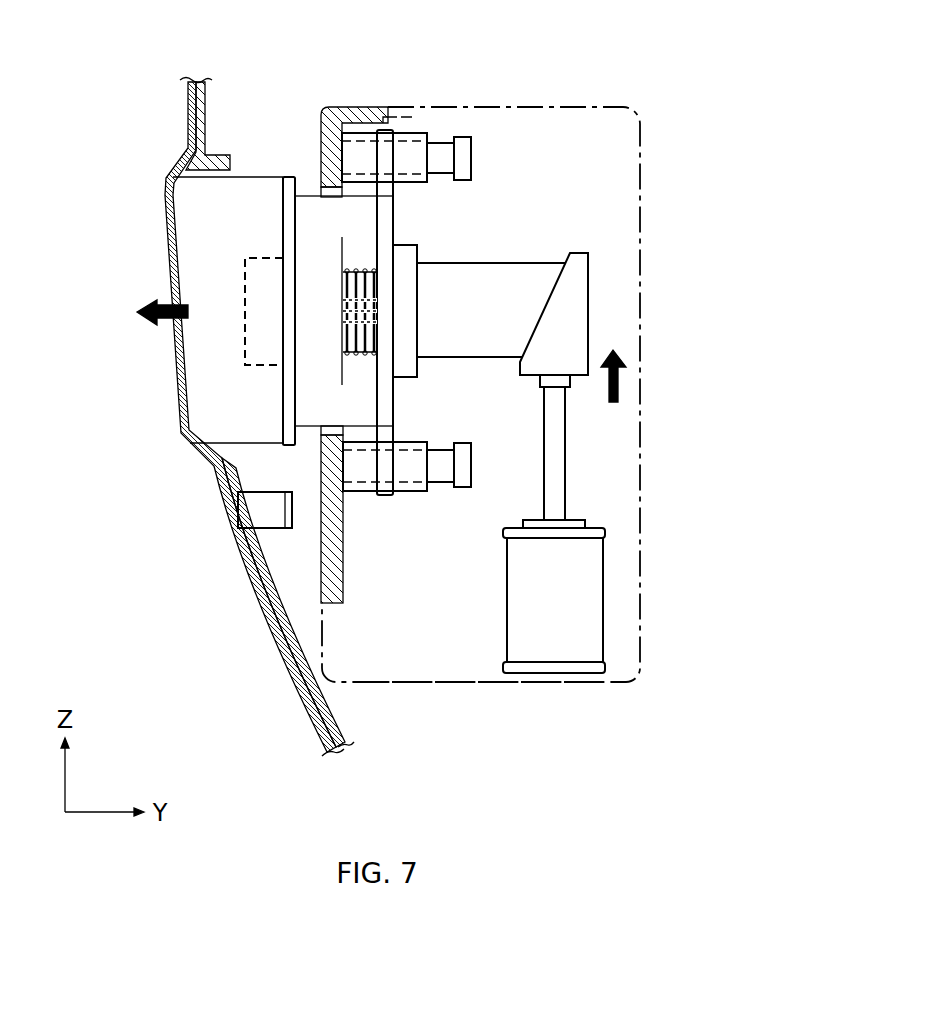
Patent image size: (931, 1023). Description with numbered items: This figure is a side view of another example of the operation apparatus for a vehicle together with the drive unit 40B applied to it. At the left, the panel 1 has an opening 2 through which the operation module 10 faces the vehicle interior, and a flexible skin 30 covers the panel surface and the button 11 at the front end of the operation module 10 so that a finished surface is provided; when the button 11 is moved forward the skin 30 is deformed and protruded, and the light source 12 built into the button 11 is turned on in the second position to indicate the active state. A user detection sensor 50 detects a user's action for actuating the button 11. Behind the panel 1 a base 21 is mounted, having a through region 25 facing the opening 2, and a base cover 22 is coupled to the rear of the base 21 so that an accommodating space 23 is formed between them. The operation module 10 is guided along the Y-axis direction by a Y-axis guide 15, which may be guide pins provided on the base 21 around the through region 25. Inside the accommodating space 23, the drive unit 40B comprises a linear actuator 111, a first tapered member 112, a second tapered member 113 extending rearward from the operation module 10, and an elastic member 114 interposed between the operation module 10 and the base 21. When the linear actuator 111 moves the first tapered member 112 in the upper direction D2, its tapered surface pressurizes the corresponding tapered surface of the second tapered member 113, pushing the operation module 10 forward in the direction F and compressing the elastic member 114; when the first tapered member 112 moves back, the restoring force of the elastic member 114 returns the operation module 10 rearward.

The panel 1 is at (327, 712).
The opening 2 is at (218, 172).
The operation module 10 is at (264, 162).
The button 11 is at (193, 252).
The light source 12 is at (245, 345).
The Y-axis guide 15 is at (461, 143).
The base 21 is at (337, 191).
The base cover 22 is at (596, 106).
The accommodating space 23 is at (440, 635).
The through region 25 is at (333, 196).
The skin 30 is at (265, 625).
The drive unit 40B is at (593, 236).
The user detection sensor 50 is at (247, 508).
The linear actuator 111 is at (592, 586).
The first tapered member 112 is at (580, 305).
The second tapered member 113 is at (530, 270).
The elastic member 114 is at (357, 270).
The force direction F is at (140, 301).
The upper direction D2 is at (620, 385).